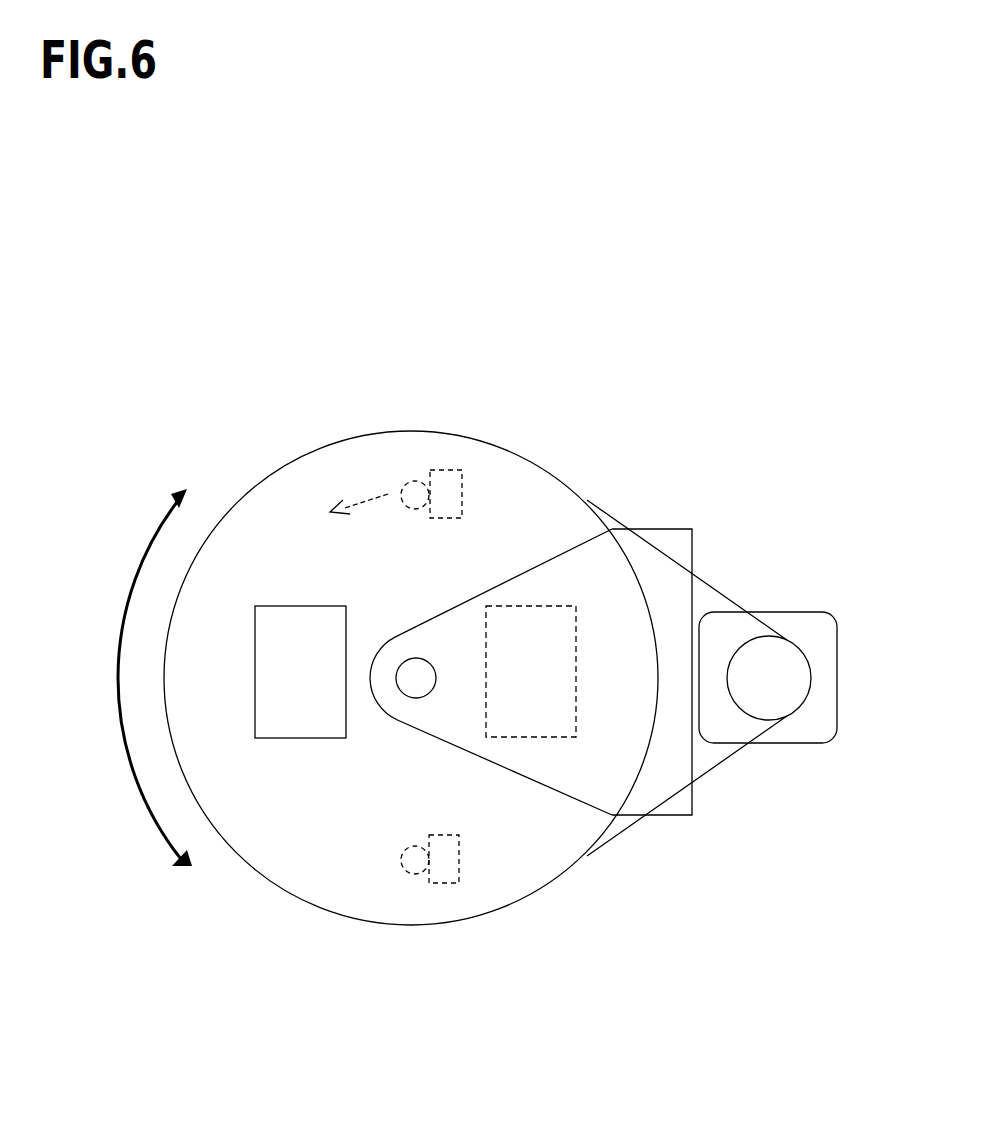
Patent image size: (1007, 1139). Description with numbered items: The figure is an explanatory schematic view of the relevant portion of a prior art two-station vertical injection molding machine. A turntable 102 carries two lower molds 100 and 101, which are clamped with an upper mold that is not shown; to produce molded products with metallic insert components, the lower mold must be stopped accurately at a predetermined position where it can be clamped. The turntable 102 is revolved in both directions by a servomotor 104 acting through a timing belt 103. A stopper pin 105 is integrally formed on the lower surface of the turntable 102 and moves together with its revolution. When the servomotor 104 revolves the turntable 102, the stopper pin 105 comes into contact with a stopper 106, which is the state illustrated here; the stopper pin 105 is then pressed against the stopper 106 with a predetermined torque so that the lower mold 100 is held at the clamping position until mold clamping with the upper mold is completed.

The lower mold 100 is at (545, 717).
The lower mold 101 is at (300, 712).
The turntable 102 is at (338, 840).
The timing belt 103 is at (715, 765).
The servomotor 104 is at (813, 643).
The stopper pin 105 is at (415, 487).
The stopper 106 is at (462, 478).